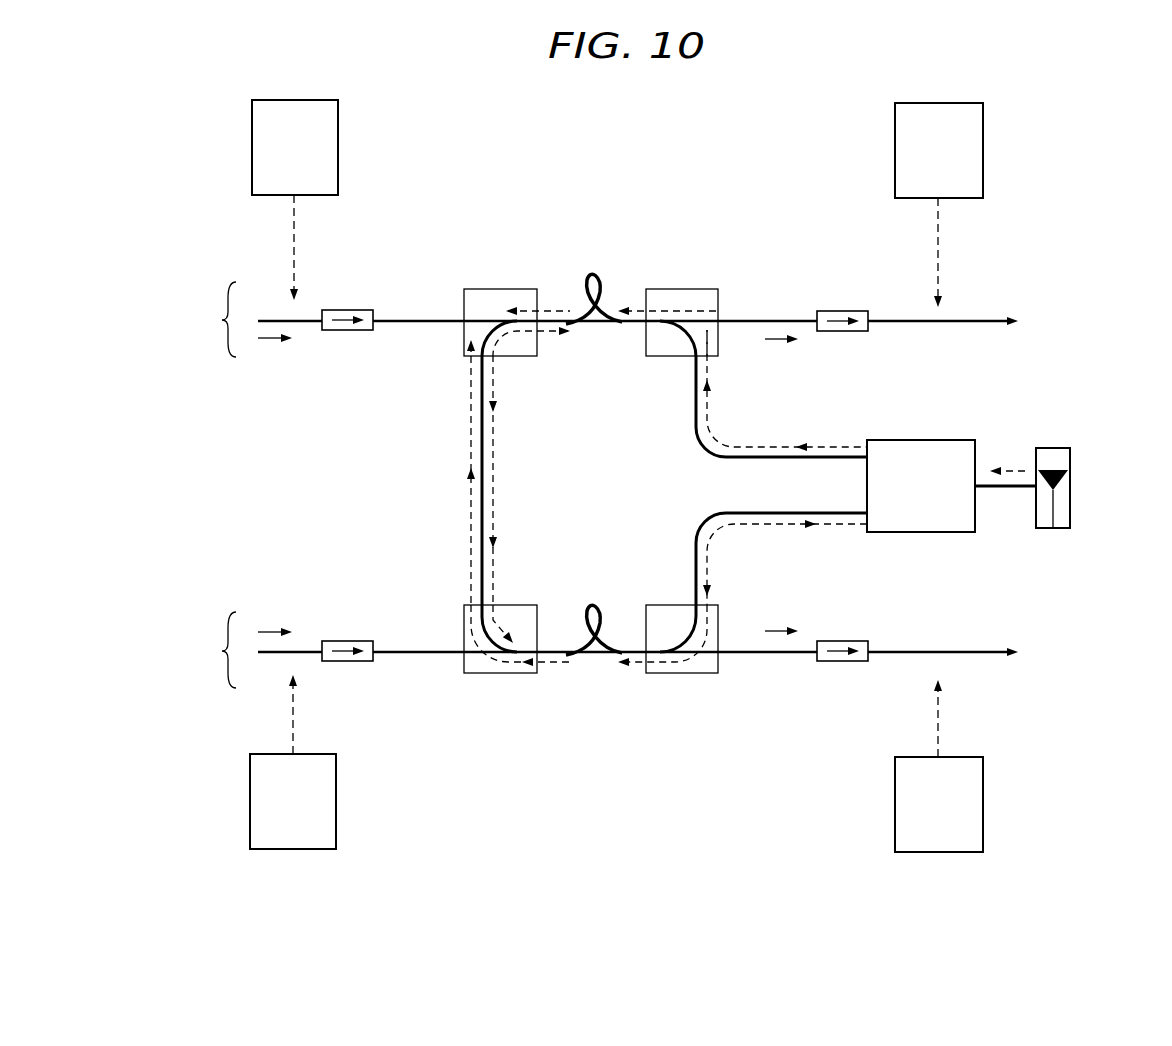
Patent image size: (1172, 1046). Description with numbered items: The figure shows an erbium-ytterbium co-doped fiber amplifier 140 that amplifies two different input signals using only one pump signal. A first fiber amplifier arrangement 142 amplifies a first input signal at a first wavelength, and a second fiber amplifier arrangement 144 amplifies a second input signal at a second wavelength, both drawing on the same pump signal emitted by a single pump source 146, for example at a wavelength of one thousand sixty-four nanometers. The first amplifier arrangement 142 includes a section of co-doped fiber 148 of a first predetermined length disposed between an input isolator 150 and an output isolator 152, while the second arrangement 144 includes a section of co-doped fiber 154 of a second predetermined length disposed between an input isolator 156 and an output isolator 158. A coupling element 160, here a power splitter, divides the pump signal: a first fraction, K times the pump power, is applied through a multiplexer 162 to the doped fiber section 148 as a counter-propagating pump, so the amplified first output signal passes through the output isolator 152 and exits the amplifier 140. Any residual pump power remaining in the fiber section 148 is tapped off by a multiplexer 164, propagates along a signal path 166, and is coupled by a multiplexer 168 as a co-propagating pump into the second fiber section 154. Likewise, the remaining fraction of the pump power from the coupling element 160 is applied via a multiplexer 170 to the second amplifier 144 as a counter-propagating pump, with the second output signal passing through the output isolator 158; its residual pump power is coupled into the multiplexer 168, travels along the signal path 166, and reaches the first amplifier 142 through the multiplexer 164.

The Er-Yb co-doped fiber amplifier 140 is at (652, 99).
The first fiber amplifier arrangement 142 is at (571, 228).
The second fiber amplifier arrangement 144 is at (571, 732).
The pump source 146 is at (1073, 495).
The Er-Yb co-doped fiber section 148 is at (592, 270).
The input isolator 150 is at (348, 310).
The output isolator 152 is at (840, 311).
The Er-Yb co-doped fiber section 154 is at (592, 605).
The input isolator 156 is at (348, 641).
The output isolator 158 is at (840, 641).
The coupling element 160 is at (930, 440).
The multiplexer 162 is at (680, 289).
The multiplexer 164 is at (502, 289).
The signal path 166 is at (482, 437).
The multiplexer 168 is at (498, 673).
The multiplexer 170 is at (672, 673).